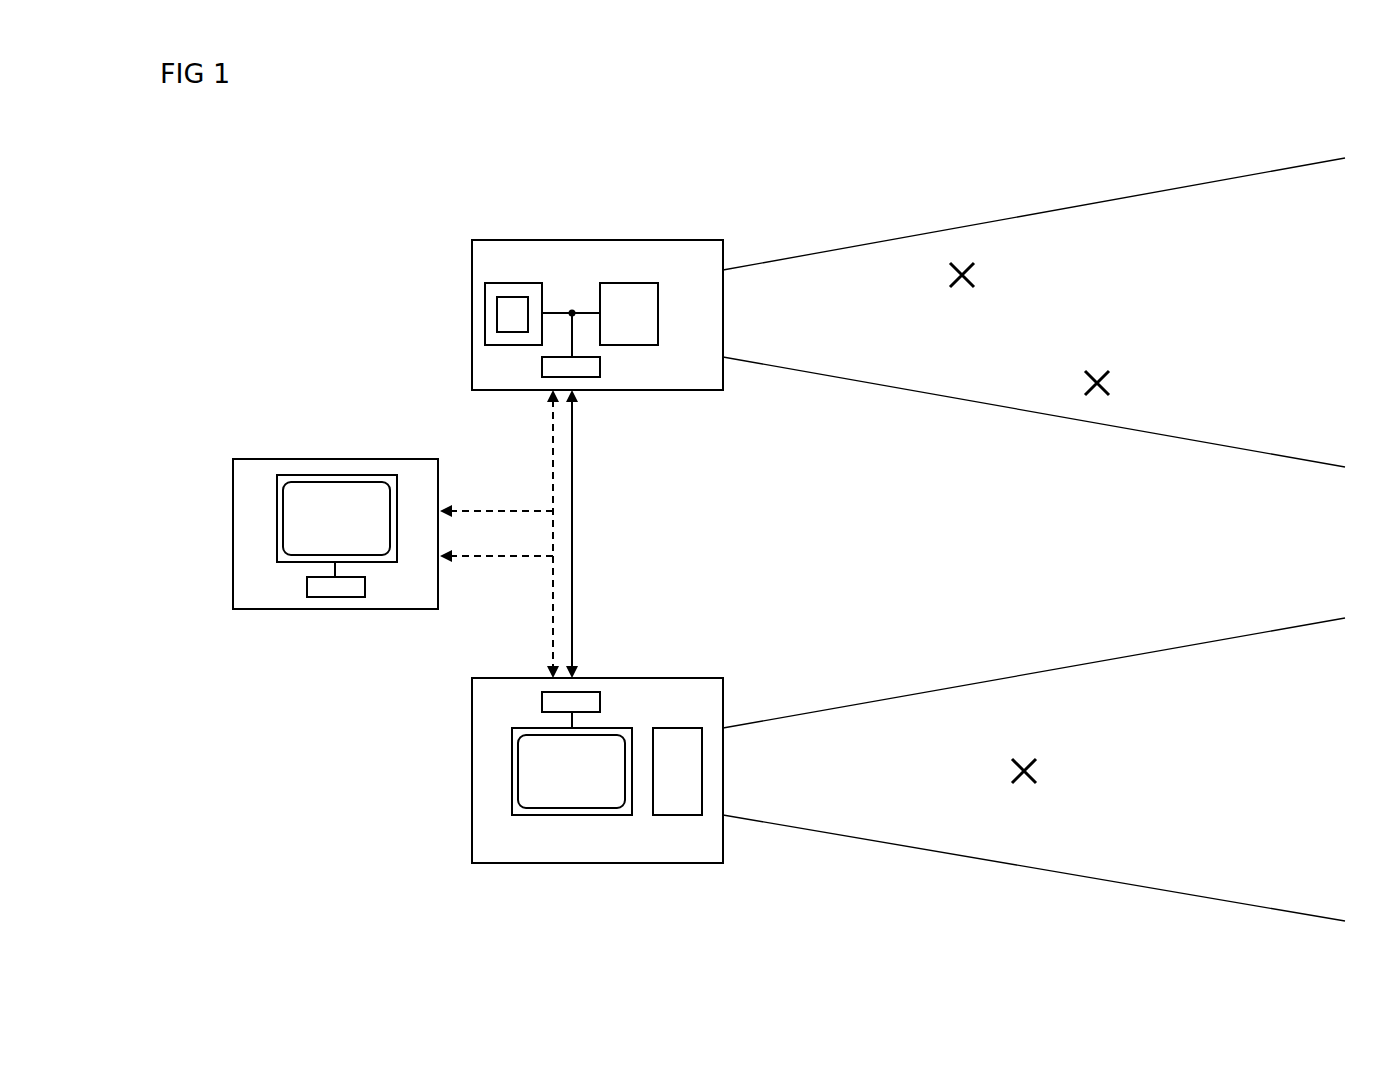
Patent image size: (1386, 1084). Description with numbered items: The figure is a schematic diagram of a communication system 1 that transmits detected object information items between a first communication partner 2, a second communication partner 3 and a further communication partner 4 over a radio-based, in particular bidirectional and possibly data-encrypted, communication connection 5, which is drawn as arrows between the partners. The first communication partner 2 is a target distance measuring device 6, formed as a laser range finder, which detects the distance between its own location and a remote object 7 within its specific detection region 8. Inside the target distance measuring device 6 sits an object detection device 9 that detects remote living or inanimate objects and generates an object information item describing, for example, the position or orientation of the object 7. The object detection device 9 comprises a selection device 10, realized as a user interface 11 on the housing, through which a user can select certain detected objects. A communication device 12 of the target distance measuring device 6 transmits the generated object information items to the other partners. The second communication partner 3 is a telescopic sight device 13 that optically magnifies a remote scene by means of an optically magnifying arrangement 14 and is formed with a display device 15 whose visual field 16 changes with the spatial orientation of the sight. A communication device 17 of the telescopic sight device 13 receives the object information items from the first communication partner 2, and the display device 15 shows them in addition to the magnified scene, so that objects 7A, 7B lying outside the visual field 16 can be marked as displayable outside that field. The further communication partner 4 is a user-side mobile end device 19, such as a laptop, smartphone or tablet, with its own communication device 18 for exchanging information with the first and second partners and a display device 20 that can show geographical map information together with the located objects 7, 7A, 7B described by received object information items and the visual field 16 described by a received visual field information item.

The communication system 1 is at (1192, 118).
The first communication partner 2 is at (453, 213).
The second communication partner 3 is at (492, 888).
The further communication partner 4 is at (263, 438).
The communication connection 5 is at (500, 511).
The target distance measuring device 6 is at (472, 262).
The object 7 is at (1024, 757).
The object located outside the visual field 7A is at (1097, 397).
The object located outside the visual field 7B is at (962, 262).
The detection region 8 is at (900, 388).
The object detection device 9 is at (630, 283).
The selection device 10 is at (528, 283).
The user interface 11 is at (510, 297).
The communication device 12 is at (600, 367).
The telescopic sight device 13 is at (472, 768).
The optically magnifying arrangement 14 is at (677, 815).
The display device 15 is at (570, 815).
The visual field 16 is at (900, 846).
The communication device 17 is at (600, 702).
The communication device 18 is at (335, 597).
The mobile end device 19 is at (233, 530).
The display device 20 is at (330, 475).